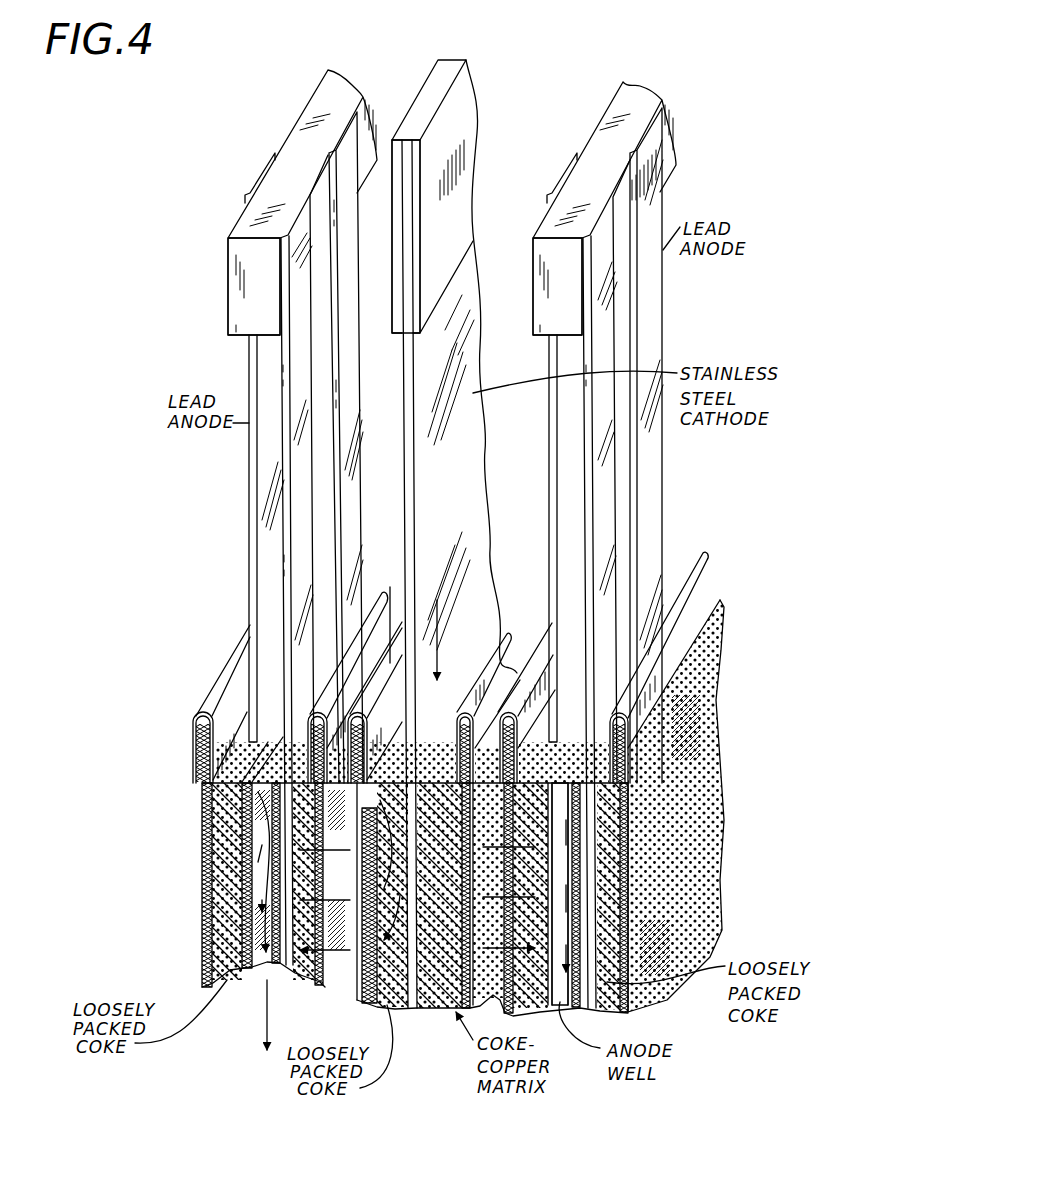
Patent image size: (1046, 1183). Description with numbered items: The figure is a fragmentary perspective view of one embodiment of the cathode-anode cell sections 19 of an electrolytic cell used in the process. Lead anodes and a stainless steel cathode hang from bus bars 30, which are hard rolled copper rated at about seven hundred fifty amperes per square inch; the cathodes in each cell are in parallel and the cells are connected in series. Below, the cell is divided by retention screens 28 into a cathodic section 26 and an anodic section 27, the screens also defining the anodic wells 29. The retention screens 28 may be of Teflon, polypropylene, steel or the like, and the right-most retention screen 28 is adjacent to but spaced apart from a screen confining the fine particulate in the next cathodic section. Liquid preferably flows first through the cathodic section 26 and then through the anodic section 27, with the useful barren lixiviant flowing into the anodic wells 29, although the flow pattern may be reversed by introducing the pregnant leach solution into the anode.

The bus bars 30 is at (365, 78).
The retention screens 28 is at (200, 845).
The cathode-anode cell sections 19 is at (750, 813).
The anodic section 27 is at (596, 1013).
The cathodic section 26 is at (431, 1006).
The anodic wells 29 is at (562, 1002).